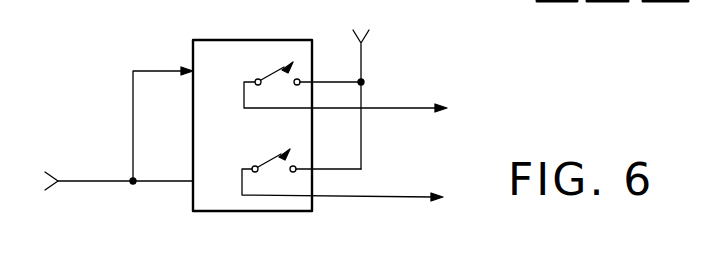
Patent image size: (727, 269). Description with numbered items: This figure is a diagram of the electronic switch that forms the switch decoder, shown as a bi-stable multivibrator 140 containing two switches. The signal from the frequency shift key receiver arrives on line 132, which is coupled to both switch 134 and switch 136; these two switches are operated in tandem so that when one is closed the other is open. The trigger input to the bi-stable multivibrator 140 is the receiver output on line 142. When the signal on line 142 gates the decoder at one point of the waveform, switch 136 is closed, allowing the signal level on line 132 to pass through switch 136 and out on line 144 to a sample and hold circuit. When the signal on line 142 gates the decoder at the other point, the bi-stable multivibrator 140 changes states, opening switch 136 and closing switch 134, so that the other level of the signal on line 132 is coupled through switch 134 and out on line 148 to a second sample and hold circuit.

The line 132 is at (362, 56).
The switch 134 is at (270, 68).
The switch 136 is at (270, 158).
The bi-stable multivibrator 140 is at (200, 53).
The line 142 is at (88, 180).
The line 144 is at (390, 195).
The line 148 is at (400, 108).